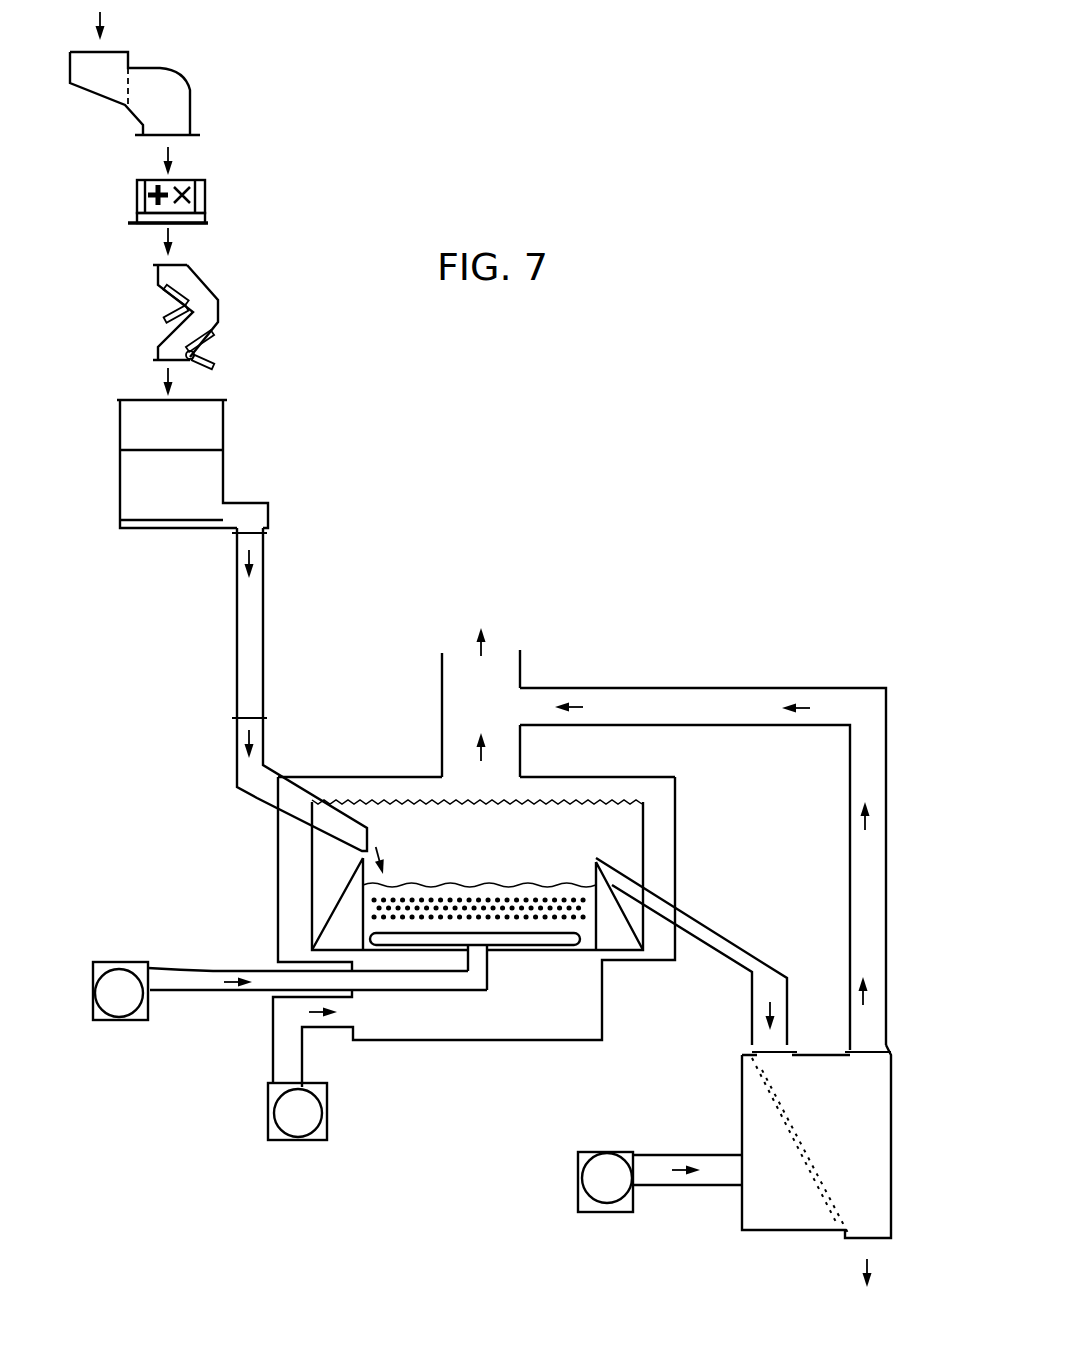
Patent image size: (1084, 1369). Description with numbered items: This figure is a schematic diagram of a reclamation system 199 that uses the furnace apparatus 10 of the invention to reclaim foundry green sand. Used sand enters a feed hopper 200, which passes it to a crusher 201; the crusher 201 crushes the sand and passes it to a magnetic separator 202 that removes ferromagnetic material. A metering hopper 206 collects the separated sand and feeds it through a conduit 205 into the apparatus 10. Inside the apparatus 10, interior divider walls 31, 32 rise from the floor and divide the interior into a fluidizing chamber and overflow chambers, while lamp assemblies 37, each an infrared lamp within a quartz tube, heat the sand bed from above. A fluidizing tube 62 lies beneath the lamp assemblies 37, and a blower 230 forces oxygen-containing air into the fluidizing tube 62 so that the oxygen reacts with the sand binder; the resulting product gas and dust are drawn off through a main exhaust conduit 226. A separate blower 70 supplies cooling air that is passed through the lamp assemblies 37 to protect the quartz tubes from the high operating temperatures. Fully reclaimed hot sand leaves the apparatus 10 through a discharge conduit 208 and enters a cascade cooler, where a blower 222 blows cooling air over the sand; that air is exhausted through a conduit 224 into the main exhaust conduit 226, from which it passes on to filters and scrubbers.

The reclamation system 199 is at (348, 497).
The feed hopper 200 is at (193, 90).
The crusher 201 is at (206, 197).
The magnetic separator 202 is at (219, 317).
The metering hopper 206 is at (224, 432).
The conduit 205 is at (263, 633).
The main exhaust conduit 226 is at (442, 708).
The conduit 224 is at (850, 826).
The apparatus 10 is at (278, 873).
The interior divider wall 31 is at (362, 888).
The interior divider wall 32 is at (596, 866).
The lamp assembly 37 is at (473, 898).
The fluidizing tube 62 is at (563, 952).
The discharge conduit 208 is at (718, 933).
The blower 230 is at (120, 962).
The blower 70 is at (267, 1107).
The blower 222 is at (578, 1160).